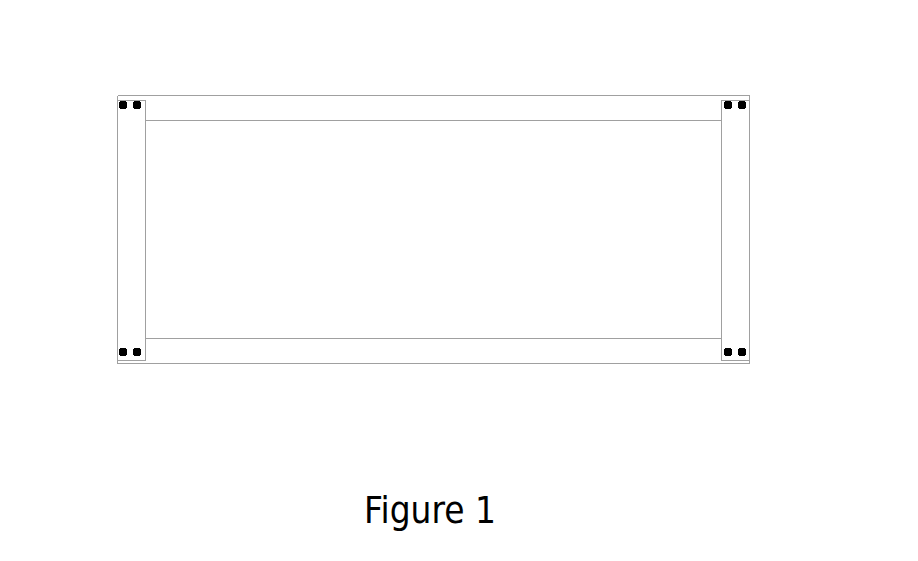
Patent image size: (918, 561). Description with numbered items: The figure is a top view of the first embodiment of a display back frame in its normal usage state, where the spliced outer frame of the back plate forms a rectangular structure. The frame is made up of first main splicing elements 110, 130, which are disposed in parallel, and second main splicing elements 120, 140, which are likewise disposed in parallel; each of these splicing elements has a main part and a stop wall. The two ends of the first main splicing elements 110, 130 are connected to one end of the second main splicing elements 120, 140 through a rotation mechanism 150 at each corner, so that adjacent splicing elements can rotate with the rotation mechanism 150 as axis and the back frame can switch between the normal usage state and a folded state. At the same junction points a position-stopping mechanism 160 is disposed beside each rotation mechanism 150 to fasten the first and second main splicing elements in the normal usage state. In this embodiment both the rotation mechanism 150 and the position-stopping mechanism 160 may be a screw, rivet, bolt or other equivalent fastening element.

The first main splicing element 110 is at (383, 105).
The second main splicing element 120 is at (734, 153).
The first main splicing element 130 is at (383, 350).
The second main splicing element 140 is at (133, 153).
The rotation mechanism 150 is at (123, 100).
The position-stopping mechanism 160 is at (137, 100).